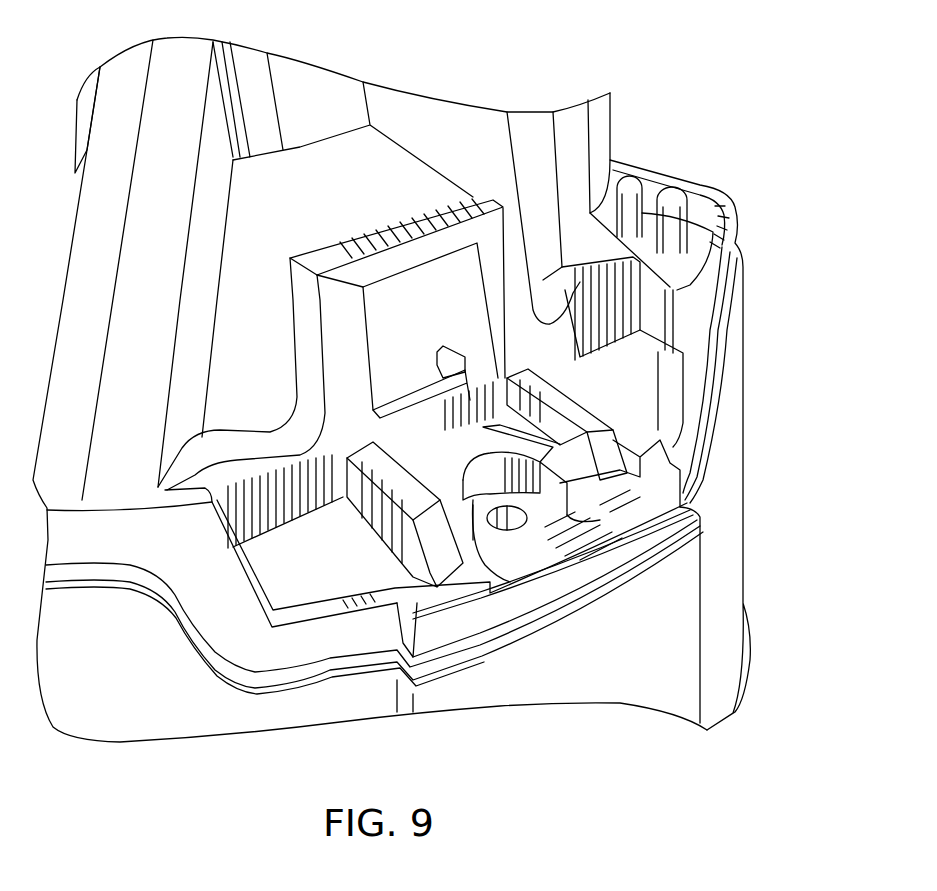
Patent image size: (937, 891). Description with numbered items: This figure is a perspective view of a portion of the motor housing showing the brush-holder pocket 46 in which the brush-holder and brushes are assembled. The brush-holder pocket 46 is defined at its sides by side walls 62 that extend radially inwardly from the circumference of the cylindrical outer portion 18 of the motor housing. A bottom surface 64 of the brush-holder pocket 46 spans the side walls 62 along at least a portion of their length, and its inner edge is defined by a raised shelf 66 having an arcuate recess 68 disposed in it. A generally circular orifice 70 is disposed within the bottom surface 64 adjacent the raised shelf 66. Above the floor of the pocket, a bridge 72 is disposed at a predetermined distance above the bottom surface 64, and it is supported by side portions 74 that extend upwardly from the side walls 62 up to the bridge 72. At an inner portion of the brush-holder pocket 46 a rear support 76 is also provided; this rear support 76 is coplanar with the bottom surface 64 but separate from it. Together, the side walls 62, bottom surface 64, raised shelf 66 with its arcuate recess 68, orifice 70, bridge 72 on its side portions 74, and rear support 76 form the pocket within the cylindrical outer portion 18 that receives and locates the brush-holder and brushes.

The cylindrical outer portion 18 is at (748, 461).
The brush-holder pocket 46 is at (534, 188).
The side walls 62 is at (560, 403).
The bottom surface 64 is at (598, 518).
The raised shelf 66 is at (473, 505).
The arcuate recess 68 is at (513, 530).
The circular orifice 70 is at (525, 525).
The bridge 72 is at (402, 228).
The side portions 74 is at (345, 375).
The rear support 76 is at (408, 394).